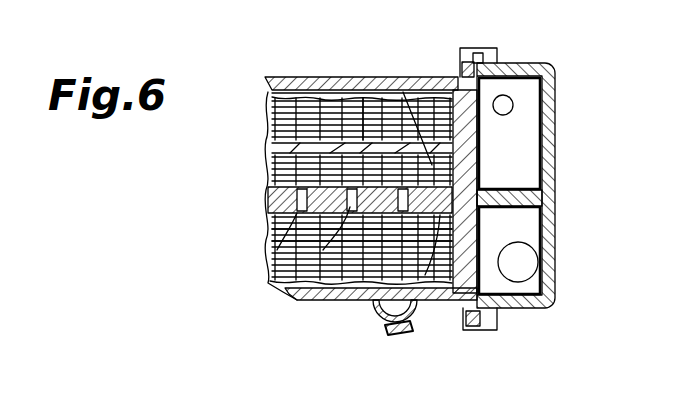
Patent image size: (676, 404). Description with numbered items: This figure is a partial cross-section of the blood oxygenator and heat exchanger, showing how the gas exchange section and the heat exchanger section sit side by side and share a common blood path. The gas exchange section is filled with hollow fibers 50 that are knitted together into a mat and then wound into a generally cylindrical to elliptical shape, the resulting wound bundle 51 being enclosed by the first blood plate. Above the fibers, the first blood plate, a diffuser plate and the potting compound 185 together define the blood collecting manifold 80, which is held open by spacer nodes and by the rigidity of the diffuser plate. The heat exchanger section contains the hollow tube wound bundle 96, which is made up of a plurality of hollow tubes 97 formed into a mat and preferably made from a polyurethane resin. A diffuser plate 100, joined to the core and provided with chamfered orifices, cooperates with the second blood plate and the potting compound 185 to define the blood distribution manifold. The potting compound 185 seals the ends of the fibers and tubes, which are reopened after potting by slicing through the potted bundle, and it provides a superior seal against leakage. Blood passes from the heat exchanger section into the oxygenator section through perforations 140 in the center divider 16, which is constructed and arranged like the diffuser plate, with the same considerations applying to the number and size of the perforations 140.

The center divider 16 is at (268, 203).
The hollow fibers 50 is at (268, 112).
The wound bundle 51 is at (356, 125).
The blood collecting manifold 80 is at (316, 78).
The hollow tube wound bundle 96 is at (270, 241).
The hollow tubes 97 is at (357, 305).
The diffuser plate 100 is at (310, 302).
The perforations 140 is at (323, 250).
The potting compound 185 is at (448, 100).